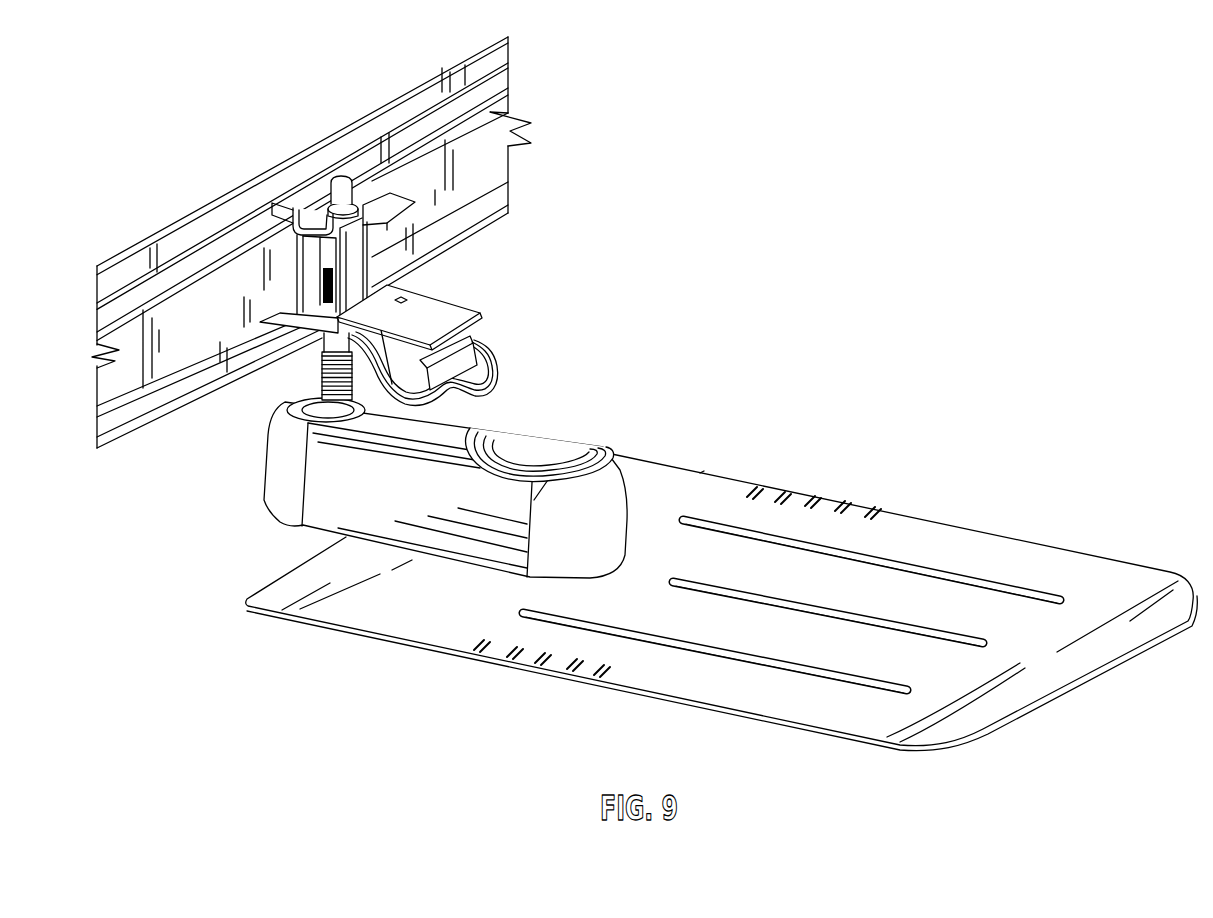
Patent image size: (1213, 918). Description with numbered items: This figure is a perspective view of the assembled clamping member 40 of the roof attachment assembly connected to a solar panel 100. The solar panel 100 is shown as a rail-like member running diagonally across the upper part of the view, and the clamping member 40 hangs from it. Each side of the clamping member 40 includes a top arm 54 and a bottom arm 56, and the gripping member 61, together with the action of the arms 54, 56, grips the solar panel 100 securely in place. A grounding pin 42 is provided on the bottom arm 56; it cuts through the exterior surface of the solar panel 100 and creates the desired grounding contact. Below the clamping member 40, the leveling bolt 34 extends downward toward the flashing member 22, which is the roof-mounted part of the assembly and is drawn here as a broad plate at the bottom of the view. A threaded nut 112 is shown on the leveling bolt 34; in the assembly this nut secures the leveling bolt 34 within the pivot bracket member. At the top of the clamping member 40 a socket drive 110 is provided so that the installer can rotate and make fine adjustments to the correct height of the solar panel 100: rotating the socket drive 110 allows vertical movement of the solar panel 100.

The solar panel 100 is at (436, 80).
The flashing member 22 is at (915, 614).
The leveling bolt 34 is at (300, 398).
The threaded nut 112 is at (320, 362).
The clamping member 40 is at (397, 280).
The grounding pin 42 is at (400, 305).
The bottom arm 56 is at (277, 313).
The gripping member 61 is at (290, 215).
The top arm 54 is at (345, 190).
The socket drive 110 is at (335, 182).